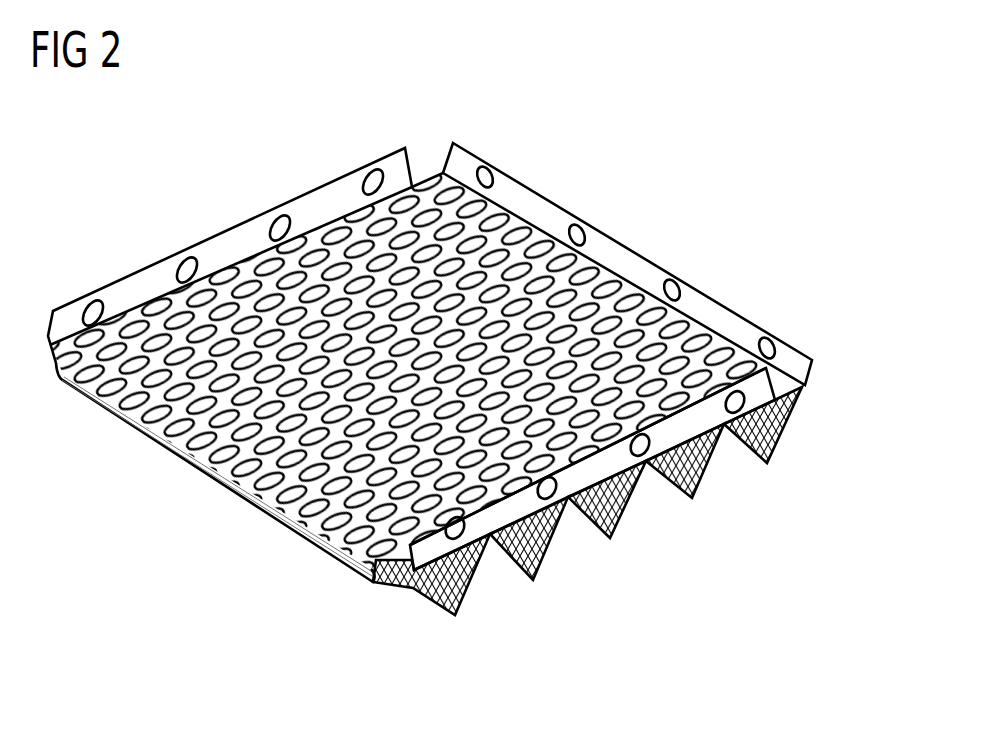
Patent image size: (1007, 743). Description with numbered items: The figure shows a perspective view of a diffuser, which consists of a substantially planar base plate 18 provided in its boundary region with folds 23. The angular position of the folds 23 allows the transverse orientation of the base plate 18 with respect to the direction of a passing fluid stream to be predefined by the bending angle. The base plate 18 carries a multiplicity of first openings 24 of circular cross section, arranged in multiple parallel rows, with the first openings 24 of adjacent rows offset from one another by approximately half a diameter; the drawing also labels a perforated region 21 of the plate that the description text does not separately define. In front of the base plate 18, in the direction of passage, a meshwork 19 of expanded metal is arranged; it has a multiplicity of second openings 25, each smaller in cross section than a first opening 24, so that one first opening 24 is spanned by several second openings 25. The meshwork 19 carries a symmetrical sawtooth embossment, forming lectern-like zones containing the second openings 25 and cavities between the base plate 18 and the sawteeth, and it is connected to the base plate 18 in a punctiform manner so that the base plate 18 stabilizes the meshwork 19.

The base plate 18 is at (783, 390).
The meshwork 19 is at (528, 545).
The perforated plate 21 is at (408, 377).
The folds 23 is at (253, 233).
The first openings 24 is at (280, 500).
The second openings 25 is at (768, 428).